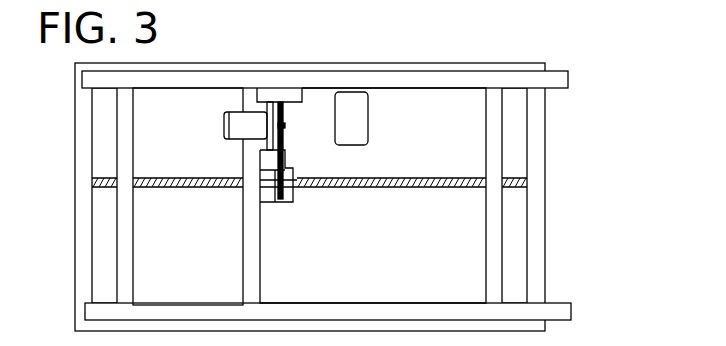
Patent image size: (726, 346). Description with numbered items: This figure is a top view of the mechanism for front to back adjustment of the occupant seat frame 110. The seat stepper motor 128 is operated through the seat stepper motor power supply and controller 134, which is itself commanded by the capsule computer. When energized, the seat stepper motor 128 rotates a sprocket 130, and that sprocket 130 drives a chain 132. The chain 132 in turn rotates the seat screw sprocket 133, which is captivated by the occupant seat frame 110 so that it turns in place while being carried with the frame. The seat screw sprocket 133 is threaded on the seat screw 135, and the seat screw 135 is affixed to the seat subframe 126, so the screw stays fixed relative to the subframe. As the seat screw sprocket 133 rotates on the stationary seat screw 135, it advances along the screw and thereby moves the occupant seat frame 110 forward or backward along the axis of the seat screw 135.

The occupant seat frame 110 is at (570, 79).
The seat subframe 126 is at (546, 125).
The seat stepper motor 128 is at (232, 112).
The sprocket 130 is at (288, 113).
The chain 132 is at (286, 155).
The seat screw sprocket 133 is at (275, 203).
The seat stepper motor power supply and controller 134 is at (368, 118).
The seat screw 135 is at (352, 189).